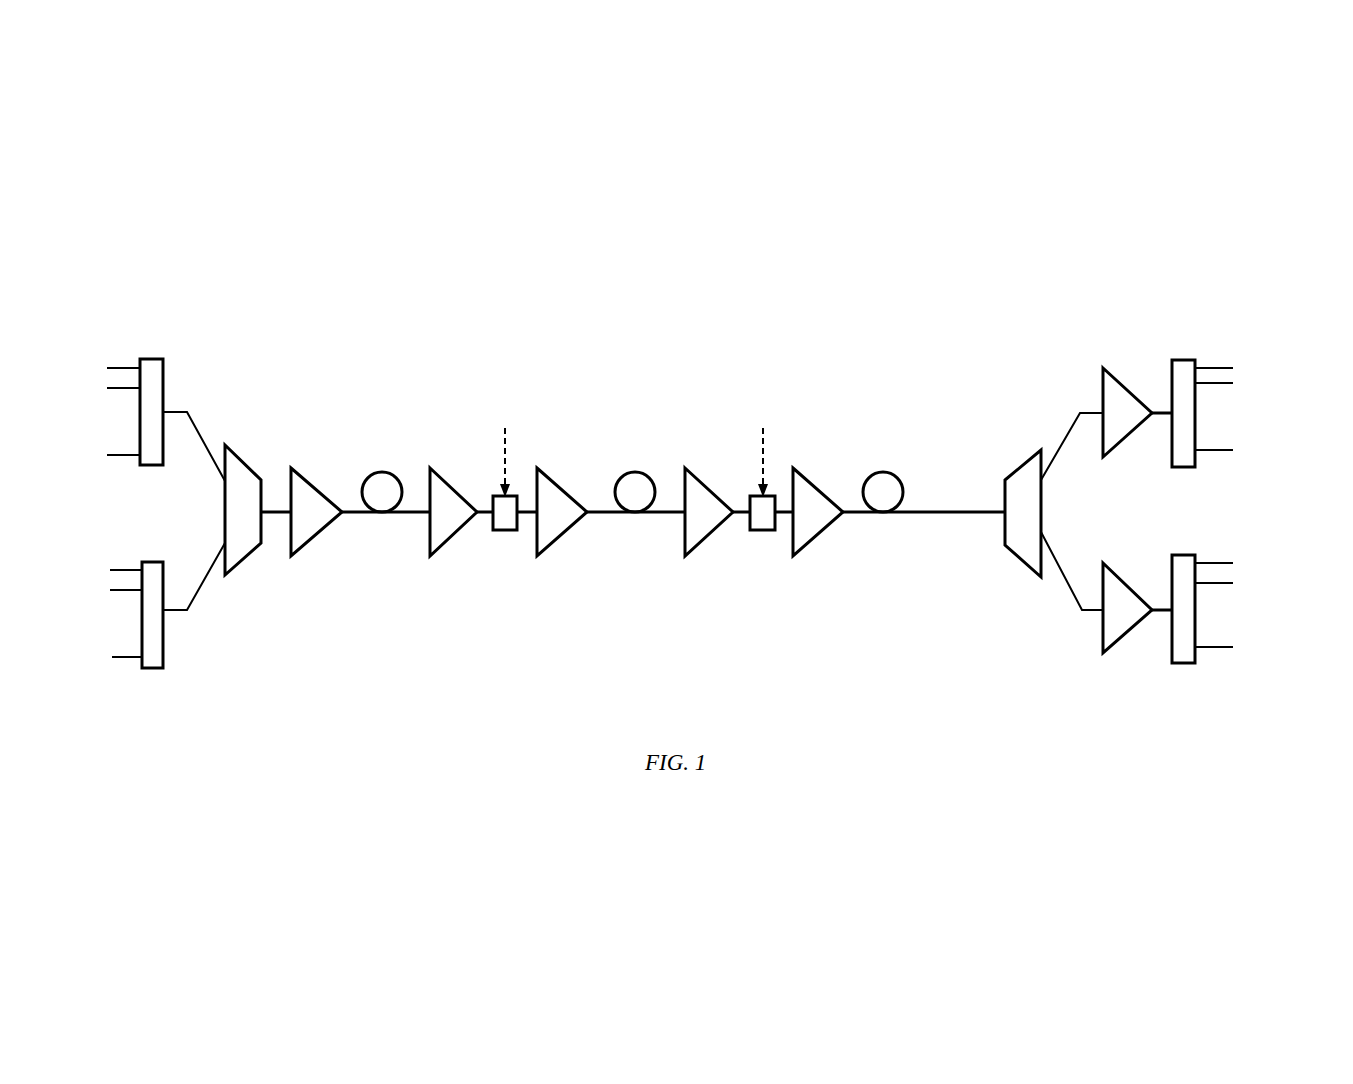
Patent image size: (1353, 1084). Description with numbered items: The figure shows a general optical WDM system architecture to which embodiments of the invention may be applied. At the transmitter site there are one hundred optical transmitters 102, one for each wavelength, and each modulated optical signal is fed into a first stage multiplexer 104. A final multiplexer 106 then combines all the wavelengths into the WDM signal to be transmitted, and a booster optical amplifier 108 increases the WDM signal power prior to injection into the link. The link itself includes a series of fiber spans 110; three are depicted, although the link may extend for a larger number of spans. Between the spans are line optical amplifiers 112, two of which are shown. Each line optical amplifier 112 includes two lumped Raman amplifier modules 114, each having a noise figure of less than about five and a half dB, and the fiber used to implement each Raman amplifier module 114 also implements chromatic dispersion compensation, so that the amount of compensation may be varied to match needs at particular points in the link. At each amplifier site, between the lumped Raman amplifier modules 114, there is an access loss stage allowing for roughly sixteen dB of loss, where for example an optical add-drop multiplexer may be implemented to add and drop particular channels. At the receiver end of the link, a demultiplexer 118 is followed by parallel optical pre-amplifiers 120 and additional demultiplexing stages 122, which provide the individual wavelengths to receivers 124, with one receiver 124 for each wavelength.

The optical transmitters 102 is at (95, 340).
The first stage multiplexer 104 is at (163, 378).
The final multiplexer 106 is at (247, 460).
The booster optical amplifier 108 is at (317, 535).
The fiber spans 110 is at (365, 478).
The line optical amplifiers 112 is at (522, 367).
The lumped Raman amplifier modules 114 is at (455, 538).
The demultiplexer 118 is at (1042, 498).
The optical pre-amplifiers 120 is at (1112, 378).
The additional demultiplexing stages 122 is at (1182, 360).
The receivers 124 is at (1265, 312).